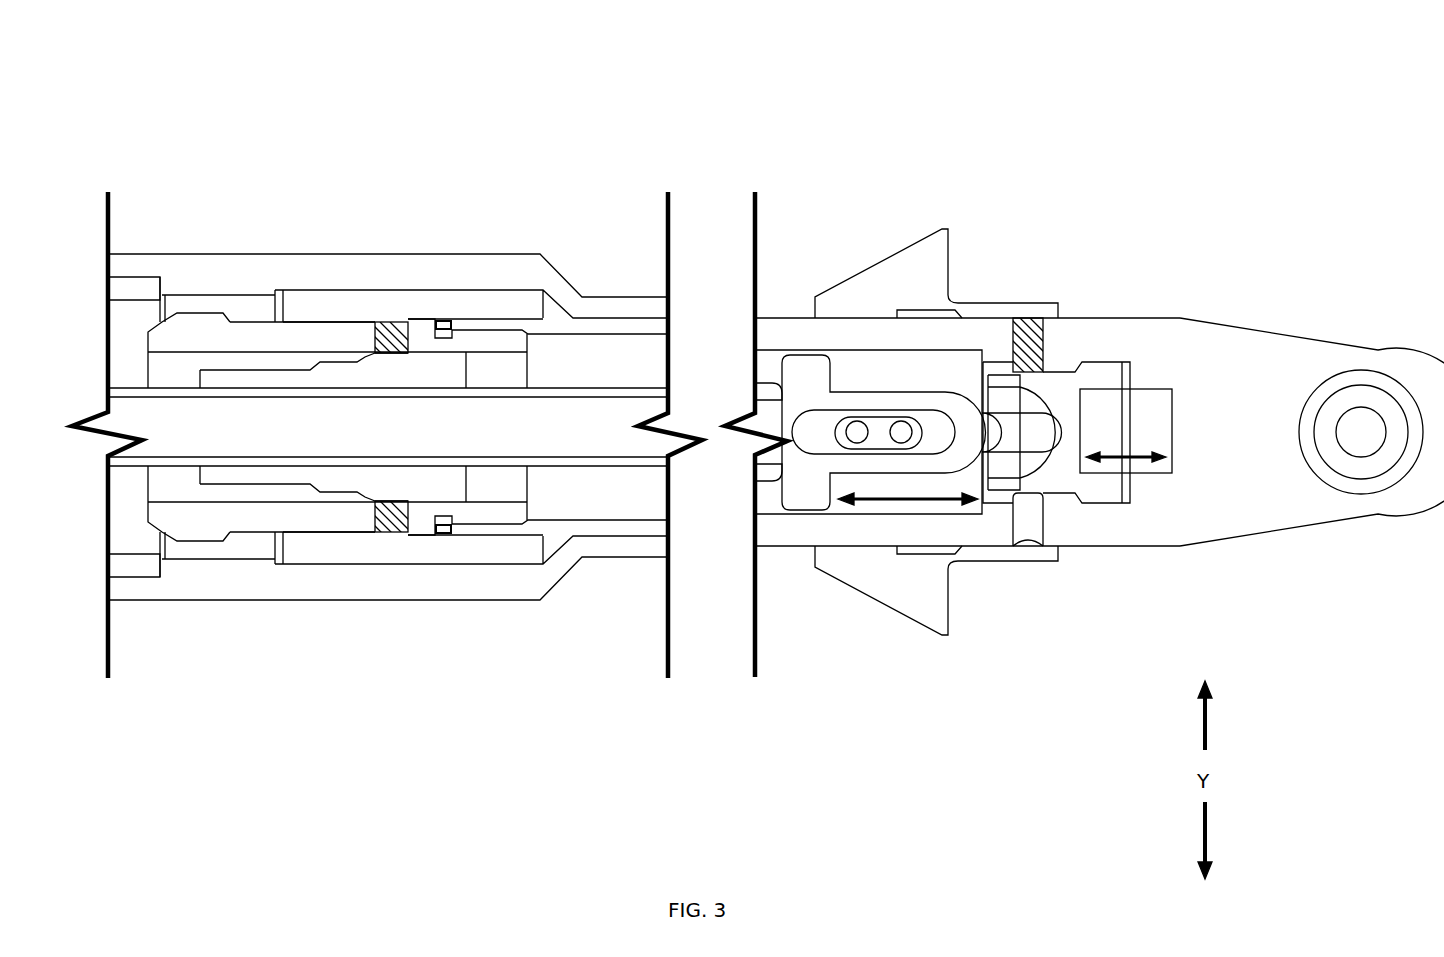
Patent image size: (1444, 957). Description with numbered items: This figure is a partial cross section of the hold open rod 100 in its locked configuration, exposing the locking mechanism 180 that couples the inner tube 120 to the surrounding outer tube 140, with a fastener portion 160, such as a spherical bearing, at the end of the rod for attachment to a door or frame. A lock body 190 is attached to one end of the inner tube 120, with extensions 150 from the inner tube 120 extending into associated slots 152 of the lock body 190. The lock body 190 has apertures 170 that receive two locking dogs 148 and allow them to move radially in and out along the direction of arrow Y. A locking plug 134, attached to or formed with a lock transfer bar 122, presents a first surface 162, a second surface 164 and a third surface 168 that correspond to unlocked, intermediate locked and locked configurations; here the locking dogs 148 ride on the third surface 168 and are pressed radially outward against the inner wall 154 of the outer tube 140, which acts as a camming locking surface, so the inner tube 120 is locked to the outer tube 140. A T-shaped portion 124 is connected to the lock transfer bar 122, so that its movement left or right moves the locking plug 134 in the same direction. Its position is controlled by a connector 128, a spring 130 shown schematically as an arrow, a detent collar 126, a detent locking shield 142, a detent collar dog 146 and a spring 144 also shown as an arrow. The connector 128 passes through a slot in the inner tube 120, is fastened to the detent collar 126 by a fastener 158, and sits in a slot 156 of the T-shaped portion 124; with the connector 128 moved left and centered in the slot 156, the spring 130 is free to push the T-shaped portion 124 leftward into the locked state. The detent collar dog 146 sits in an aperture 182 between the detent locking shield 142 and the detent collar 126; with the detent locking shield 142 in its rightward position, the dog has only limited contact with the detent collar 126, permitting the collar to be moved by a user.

The hold open rod 100 is at (718, 118).
The inner tube 120 is at (567, 318).
The lock transfer bar 122 is at (757, 385).
The T-shaped portion 124 is at (790, 475).
The detent collar 126 is at (922, 253).
The connector 128 is at (870, 447).
The spring 130 is at (930, 502).
The locking plug 134 is at (335, 473).
The outer tube 140 is at (450, 282).
The detent locking shield 142 is at (1093, 373).
The spring 144 is at (1120, 478).
The detent collar dog 146 is at (1040, 322).
The locking dogs 148 is at (388, 340).
The extensions 150 is at (449, 530).
The slots 152 is at (455, 525).
The inner wall 154 is at (392, 533).
The slot 156 is at (932, 425).
The fastener 158 is at (895, 442).
The fastener portion 160 is at (1361, 395).
The first surface 162 is at (288, 367).
The second surface 164 is at (337, 362).
The third surface 168 is at (400, 360).
The apertures 170 is at (438, 528).
The locking mechanism 180 is at (777, 198).
The aperture 182 is at (1046, 342).
The lock body 190 is at (242, 525).